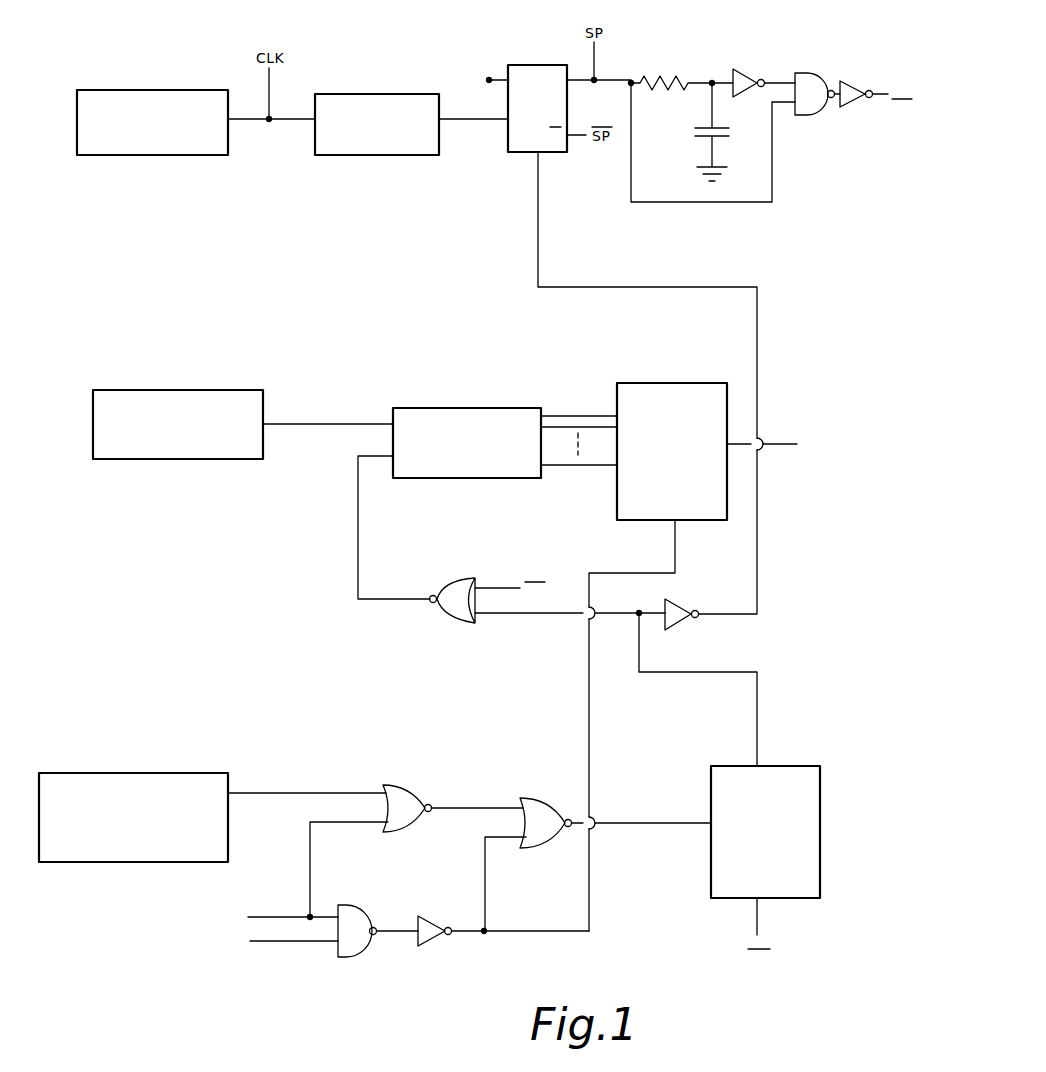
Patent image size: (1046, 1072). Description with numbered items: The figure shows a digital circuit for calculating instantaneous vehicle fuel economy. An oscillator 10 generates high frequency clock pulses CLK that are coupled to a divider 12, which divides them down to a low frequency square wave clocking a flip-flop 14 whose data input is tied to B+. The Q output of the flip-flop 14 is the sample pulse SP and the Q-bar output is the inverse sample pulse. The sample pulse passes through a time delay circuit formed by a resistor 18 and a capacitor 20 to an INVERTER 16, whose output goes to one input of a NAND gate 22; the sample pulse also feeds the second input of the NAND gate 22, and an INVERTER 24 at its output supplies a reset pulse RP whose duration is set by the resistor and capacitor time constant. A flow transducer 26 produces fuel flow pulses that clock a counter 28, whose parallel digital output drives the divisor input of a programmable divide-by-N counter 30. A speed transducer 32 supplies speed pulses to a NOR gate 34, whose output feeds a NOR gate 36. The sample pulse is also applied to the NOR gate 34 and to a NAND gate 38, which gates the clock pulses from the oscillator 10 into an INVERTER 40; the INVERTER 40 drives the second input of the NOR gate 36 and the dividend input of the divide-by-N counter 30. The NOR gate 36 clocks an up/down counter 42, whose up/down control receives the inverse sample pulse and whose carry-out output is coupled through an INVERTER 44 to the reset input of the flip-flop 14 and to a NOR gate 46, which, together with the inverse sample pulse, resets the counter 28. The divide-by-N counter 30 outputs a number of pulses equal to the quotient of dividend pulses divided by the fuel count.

The oscillator 10 is at (158, 143).
The divider 12 is at (368, 98).
The flip-flop 14 is at (519, 144).
The INVERTER 16 is at (748, 80).
The resistor 18 is at (667, 78).
The capacitor 20 is at (703, 137).
The NAND gate 22 is at (812, 108).
The INVERTER 24 is at (855, 88).
The flow transducer 26 is at (193, 452).
The counter 28 is at (453, 408).
The programmable divide-by-N counter 30 is at (673, 388).
The speed transducer 32 is at (172, 778).
The NOR gate 34 is at (395, 792).
The NOR gate 36 is at (538, 807).
The NAND gate 38 is at (350, 950).
The INVERTER 40 is at (432, 942).
The up/down counter 42 is at (812, 785).
The INVERTER 44 is at (673, 608).
The NOR gate 46 is at (453, 612).